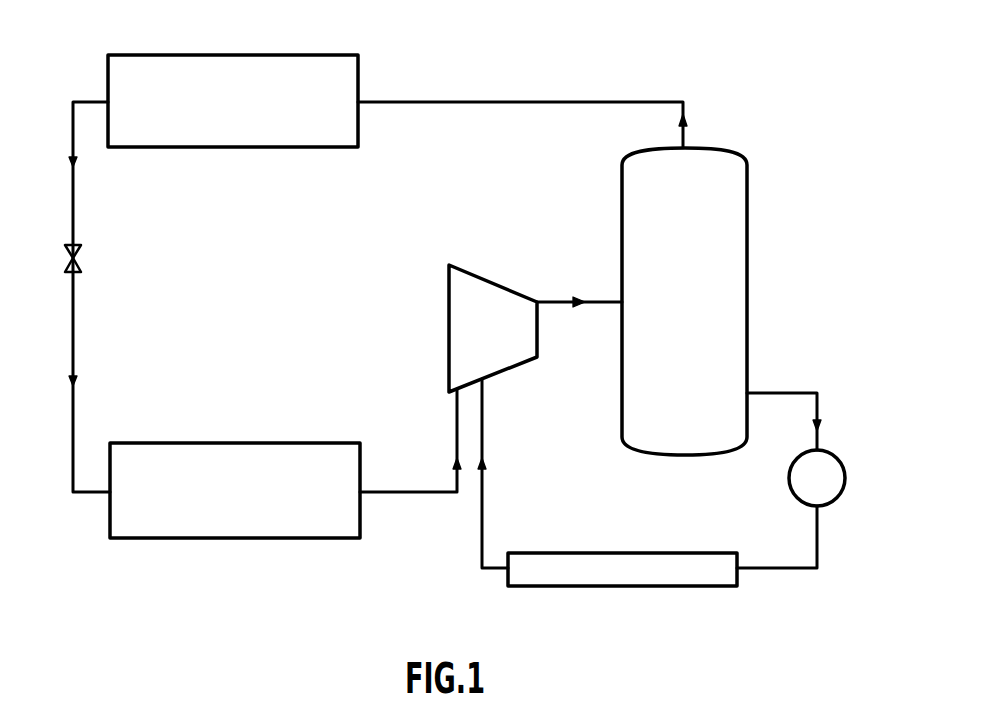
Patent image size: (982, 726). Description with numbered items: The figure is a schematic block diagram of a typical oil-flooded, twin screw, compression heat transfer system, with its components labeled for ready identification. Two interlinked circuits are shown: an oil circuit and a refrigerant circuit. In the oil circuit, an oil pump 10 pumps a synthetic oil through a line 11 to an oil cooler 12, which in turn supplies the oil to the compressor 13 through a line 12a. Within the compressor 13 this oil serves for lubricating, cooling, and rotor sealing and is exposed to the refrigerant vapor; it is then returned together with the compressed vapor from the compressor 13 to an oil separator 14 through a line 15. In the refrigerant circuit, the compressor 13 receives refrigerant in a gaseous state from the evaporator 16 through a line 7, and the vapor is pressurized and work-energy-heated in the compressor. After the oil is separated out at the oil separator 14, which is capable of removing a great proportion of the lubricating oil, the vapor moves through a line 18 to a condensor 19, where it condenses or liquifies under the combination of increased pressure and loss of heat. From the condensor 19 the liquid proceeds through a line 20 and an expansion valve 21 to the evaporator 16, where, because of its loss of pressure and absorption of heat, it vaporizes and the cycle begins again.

The condensor 19 is at (244, 121).
The line 20 is at (73, 192).
The expansion valve 21 is at (64, 258).
The evaporator 16 is at (298, 528).
The line 7 is at (400, 490).
The compressor 13 is at (511, 352).
The line 15 is at (557, 302).
The line 18 is at (558, 101).
The oil separator 14 is at (738, 250).
The oil pump 10 is at (789, 478).
The line 11 is at (772, 567).
The oil cooler 12 is at (625, 551).
The line 12a is at (483, 513).